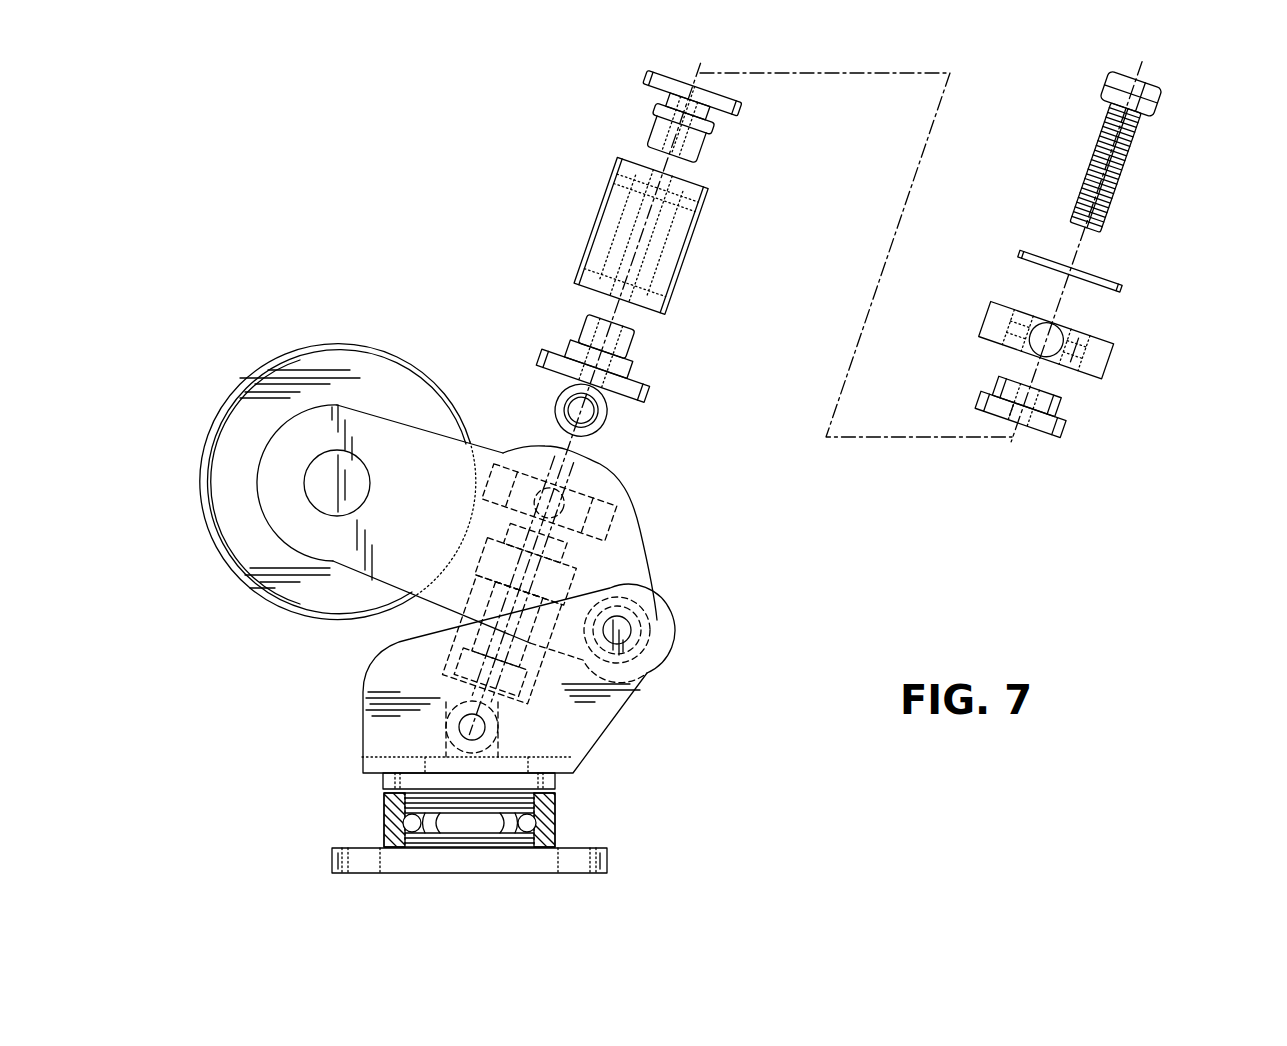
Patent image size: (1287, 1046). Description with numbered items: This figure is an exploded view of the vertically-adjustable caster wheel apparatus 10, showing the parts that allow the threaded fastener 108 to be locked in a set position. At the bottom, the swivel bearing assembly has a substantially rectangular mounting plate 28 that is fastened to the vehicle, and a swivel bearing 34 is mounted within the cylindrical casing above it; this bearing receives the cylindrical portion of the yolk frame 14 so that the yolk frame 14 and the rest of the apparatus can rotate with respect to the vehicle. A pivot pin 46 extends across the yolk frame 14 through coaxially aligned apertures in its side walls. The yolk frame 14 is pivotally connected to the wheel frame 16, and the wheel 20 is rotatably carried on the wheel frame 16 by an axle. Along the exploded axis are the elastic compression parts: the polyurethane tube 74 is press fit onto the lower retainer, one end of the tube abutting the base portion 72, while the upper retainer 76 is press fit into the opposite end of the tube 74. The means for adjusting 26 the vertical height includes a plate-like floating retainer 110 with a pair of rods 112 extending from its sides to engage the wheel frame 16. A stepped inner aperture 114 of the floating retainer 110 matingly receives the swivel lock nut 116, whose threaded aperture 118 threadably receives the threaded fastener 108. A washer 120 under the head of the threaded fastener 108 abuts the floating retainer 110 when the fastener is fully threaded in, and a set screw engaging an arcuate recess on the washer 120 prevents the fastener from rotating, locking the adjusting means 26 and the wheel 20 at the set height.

The caster wheel apparatus 10 is at (682, 720).
The yolk frame 14 is at (362, 702).
The wheel frame 16 is at (357, 560).
The wheel 20 is at (252, 407).
The means for adjusting 26 is at (614, 556).
The mounting plate 28 is at (333, 857).
The swivel bearing 34 is at (498, 830).
The pivot pin 46 is at (458, 727).
The base portion 72 is at (648, 395).
The polyurethane tube 74 is at (680, 225).
The upper retainer 76 is at (652, 82).
The threaded fastener 108 is at (1152, 100).
The floating retainer 110 is at (1118, 352).
The rods 112 is at (1060, 330).
The stepped inner aperture 114 is at (1073, 373).
The swivel lock nut 116 is at (1050, 426).
The threaded aperture 118 is at (1030, 416).
The washer 120 is at (1122, 291).